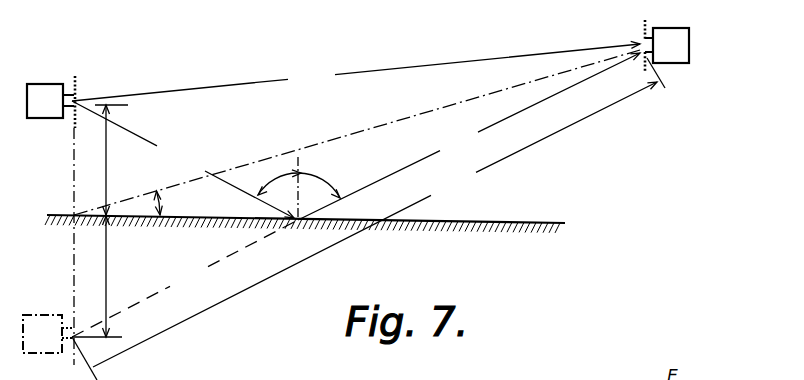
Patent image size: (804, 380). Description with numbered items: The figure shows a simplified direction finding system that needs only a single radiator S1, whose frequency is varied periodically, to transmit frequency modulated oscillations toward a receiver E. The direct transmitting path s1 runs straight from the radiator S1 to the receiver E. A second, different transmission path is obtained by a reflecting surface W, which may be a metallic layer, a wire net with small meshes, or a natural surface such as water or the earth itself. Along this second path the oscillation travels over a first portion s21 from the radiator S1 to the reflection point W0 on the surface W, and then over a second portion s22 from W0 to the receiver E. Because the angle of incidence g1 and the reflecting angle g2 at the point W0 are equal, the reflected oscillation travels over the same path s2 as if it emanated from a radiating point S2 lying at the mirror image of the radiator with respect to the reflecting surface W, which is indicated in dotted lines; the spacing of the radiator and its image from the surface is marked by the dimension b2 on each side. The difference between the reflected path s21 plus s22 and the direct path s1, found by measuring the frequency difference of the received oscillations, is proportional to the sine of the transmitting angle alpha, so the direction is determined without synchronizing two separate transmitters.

The radiator S1 is at (42, 88).
The radiating point S2 is at (50, 316).
The receiver E is at (670, 32).
The reflecting surface W is at (61, 214).
The reflection point W0 is at (311, 206).
The direct transmitting path s1 is at (356, 71).
The first part of second transmission path s21 is at (185, 219).
The second part of second transmission path s22 is at (469, 136).
The reflected path s2 is at (375, 224).
The angle of incidence g1 is at (279, 180).
The reflecting angle g2 is at (319, 183).
The transmitting angle alpha is at (357, 132).
The half distance b/2 between transmitter and wall b2 is at (100, 221).